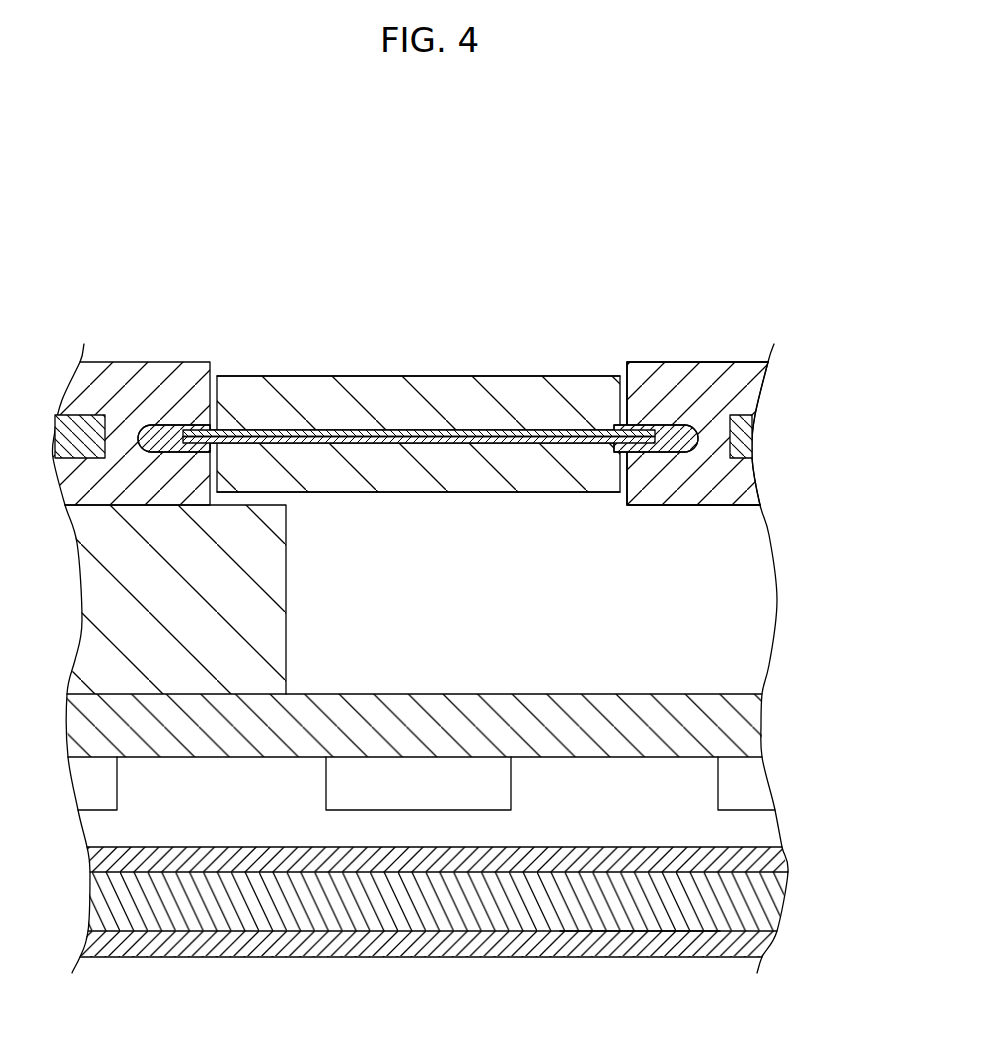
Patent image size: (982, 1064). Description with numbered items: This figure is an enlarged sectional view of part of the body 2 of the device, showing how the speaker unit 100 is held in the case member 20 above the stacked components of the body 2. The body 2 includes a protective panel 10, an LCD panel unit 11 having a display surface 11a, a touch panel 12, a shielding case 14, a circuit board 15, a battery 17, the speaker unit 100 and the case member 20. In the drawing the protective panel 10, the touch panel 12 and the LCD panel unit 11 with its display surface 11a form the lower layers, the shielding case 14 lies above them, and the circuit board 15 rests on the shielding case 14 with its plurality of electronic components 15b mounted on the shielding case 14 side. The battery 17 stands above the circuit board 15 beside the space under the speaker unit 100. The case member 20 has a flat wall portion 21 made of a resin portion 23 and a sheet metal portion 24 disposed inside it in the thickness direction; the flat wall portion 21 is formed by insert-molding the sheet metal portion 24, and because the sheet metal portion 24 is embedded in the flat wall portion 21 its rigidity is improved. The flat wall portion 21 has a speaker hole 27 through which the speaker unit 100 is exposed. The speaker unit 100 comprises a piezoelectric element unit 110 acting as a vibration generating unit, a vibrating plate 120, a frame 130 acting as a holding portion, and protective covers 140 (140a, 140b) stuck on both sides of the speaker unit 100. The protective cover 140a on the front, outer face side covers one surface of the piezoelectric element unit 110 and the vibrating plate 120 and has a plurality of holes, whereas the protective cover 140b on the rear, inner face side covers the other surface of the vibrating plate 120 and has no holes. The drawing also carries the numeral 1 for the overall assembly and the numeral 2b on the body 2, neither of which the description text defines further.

The sensor device 1 is at (637, 117).
The body 2 is at (444, 345).
The side surface of holder 2b is at (764, 367).
The protective panel 10 is at (465, 915).
The LCD panel unit 11 is at (765, 913).
The display surface 11a is at (635, 933).
The touch panel 12 is at (745, 935).
The shielding case 14 is at (765, 852).
The circuit board 15 is at (451, 752).
The electronic components 15b is at (495, 788).
The battery 17 is at (283, 615).
The case member 20 is at (699, 347).
The flat wall portion 21 is at (740, 375).
The resin portion 23 is at (147, 382).
The sheet metal portion 24 is at (93, 430).
The speaker hole 27 is at (418, 358).
The speaker unit 100 is at (418, 378).
The piezoelectric element unit 110 is at (473, 431).
The vibrating plate 120 is at (407, 431).
The frame 130 is at (662, 440).
The protective covers 140 is at (419, 358).
The protective cover 140a is at (270, 395).
The protective cover 140b is at (280, 473).